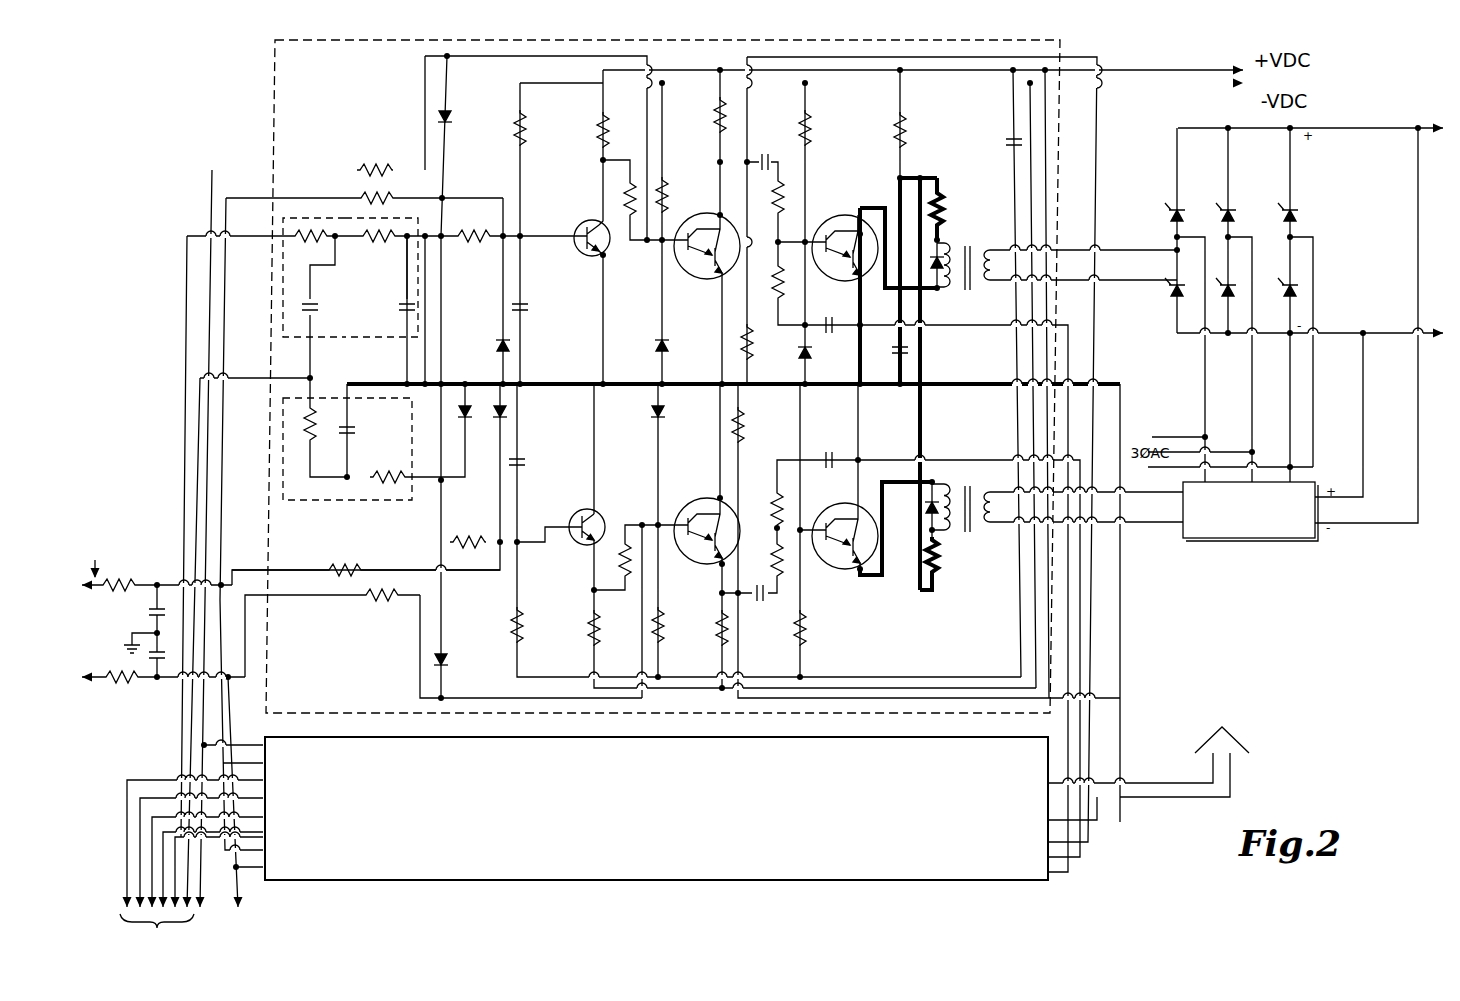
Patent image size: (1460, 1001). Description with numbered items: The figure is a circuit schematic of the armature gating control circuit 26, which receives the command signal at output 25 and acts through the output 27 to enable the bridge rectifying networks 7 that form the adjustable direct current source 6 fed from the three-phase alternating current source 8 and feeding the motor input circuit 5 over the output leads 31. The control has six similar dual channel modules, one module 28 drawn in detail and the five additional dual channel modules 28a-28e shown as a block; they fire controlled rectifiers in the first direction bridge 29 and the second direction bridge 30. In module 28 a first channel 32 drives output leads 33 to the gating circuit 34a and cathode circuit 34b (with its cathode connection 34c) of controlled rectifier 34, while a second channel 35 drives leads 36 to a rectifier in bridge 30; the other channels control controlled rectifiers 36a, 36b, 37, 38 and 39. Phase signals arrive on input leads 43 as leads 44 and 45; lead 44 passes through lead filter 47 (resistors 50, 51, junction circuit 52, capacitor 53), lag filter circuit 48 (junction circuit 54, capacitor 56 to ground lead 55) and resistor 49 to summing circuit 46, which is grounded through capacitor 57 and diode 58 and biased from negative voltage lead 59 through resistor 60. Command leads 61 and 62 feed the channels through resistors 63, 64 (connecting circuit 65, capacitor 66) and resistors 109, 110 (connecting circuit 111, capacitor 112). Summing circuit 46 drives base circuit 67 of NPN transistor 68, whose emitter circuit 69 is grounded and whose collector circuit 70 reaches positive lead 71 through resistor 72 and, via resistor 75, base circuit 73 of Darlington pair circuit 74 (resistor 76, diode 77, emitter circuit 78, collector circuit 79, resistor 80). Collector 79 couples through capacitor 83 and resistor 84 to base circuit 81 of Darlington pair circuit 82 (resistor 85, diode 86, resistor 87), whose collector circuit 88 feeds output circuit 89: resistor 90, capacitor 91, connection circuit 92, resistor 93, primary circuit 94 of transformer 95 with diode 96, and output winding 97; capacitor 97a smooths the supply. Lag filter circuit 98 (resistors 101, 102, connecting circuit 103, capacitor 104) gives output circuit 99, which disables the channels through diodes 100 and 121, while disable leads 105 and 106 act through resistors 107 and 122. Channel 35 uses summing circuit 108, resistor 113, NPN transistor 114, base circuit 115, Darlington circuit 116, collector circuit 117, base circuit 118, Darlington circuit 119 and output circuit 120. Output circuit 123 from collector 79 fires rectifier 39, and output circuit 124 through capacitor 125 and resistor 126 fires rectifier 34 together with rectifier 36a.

The input circuit 5 is at (1447, 118).
The adjustable source 6 is at (1348, 595).
The bridge rectifying networks 7 is at (1250, 548).
The three-phase alternating current source 8 is at (1185, 418).
The output 25 is at (95, 575).
The gating control circuit 26 is at (1130, 885).
The output 27 is at (1118, 225).
The dual channel module 28 is at (275, 85).
The dual channel modules 28a-28e is at (765, 882).
The first direction bridge 29 is at (1333, 193).
The second direction bridge 30 is at (1318, 538).
The output leads 31 is at (1434, 133).
The first channel 32 is at (390, 132).
The output leads 33 is at (1135, 250).
The controlled rectifier 34 is at (1170, 300).
The gating circuit 34a is at (1170, 285).
The cathode circuit 34b is at (1178, 262).
The SCR cathode 34c is at (1175, 325).
The second channel 35 is at (383, 642).
The leads 36 is at (1148, 494).
The controlled rectifier 36a is at (1298, 223).
The controlled rectifier 36b is at (1232, 282).
The controlled rectifier 37 is at (1190, 215).
The controlled rectifier 38 is at (1283, 292).
The controlled rectifier 39 is at (1240, 215).
The input leads 43 is at (154, 937).
The phase input lead 44 is at (245, 240).
The phase input lead 45 is at (243, 376).
The summing circuit 46 is at (521, 232).
The lead filter 47 is at (326, 214).
The lag filter circuit 48 is at (406, 214).
The resistor 49 is at (492, 218).
The resistor 50 is at (320, 241).
The resistor 51 is at (375, 242).
The junction circuit 52 is at (325, 253).
The capacitor 53 is at (312, 302).
The junction circuit 54 is at (402, 246).
The system ground lead 55 is at (578, 380).
The capacitor 56 is at (398, 305).
The capacitor 57 is at (530, 305).
The diode 58 is at (500, 335).
The negative voltage lead 59 is at (568, 80).
The resistor 60 is at (527, 125).
The lead 61 is at (96, 588).
The lead 62 is at (94, 672).
The resistor 63 is at (124, 582).
The resistor 64 is at (392, 197).
The connecting circuit 65 is at (158, 582).
The capacitor 66 is at (150, 610).
The base circuit 67 is at (572, 240).
The NPN transistor 68 is at (612, 260).
The emitter circuit 69 is at (604, 322).
The collector circuit 70 is at (600, 183).
The positive potential lead 71 is at (680, 68).
The resistor 72 is at (612, 128).
The base circuit 73 is at (688, 236).
The Darlington pair transistor circuit 74 is at (698, 270).
The resistor 75 is at (630, 230).
The resistor 76 is at (670, 192).
The diode 77 is at (660, 348).
The emitter circuit 78 is at (745, 331).
The collector circuit 79 is at (718, 162).
The resistor 80 is at (715, 115).
The base circuit 81 is at (822, 233).
The Darlington pair transistor circuit 82 is at (826, 270).
The capacitor 83 is at (767, 152).
The resistor 84 is at (775, 210).
The resistor 85 is at (752, 348).
The diode 86 is at (810, 358).
The resistor 87 is at (812, 128).
The collector circuit 88 is at (878, 205).
The output circuit 89 is at (957, 160).
The resistor 90 is at (908, 128).
The capacitor 91 is at (896, 354).
The connection circuit 92 is at (900, 176).
The resistor 93 is at (944, 200).
The primary circuit 94 is at (948, 245).
The transformer 95 is at (968, 240).
The diode 96 is at (941, 285).
The output winding 97 is at (988, 248).
The capacitor 97a is at (1006, 138).
The lag filter circuit 98 is at (305, 500).
The output circuit 99 is at (448, 482).
The diode 100 is at (452, 118).
The resistor 101 is at (316, 425).
The resistor 102 is at (398, 470).
The connecting circuit 103 is at (345, 470).
The capacitor 104 is at (355, 425).
The lead 105 is at (205, 895).
The lead 106 is at (245, 898).
The resistor 107 is at (375, 164).
The summing circuit 108 is at (520, 538).
The resistor 109 is at (126, 683).
The resistor 110 is at (333, 564).
The connecting circuit 111 is at (158, 685).
The capacitor 112 is at (148, 653).
The resistor 113 is at (468, 540).
The NPN transistor 114 is at (594, 514).
The base circuit 115 is at (668, 500).
The Darlington pair transistor circuit 116 is at (700, 555).
The collector circuit 117 is at (712, 580).
The base circuit 118 is at (806, 545).
The Darlington pair transistor circuit 119 is at (835, 492).
The output circuit 120 is at (968, 585).
The diode 121 is at (450, 660).
The resistor 122 is at (365, 603).
The output circuit 123 is at (1095, 56).
The output circuit 124 is at (1060, 722).
The capacitor 125 is at (830, 333).
The resistor 126 is at (776, 292).